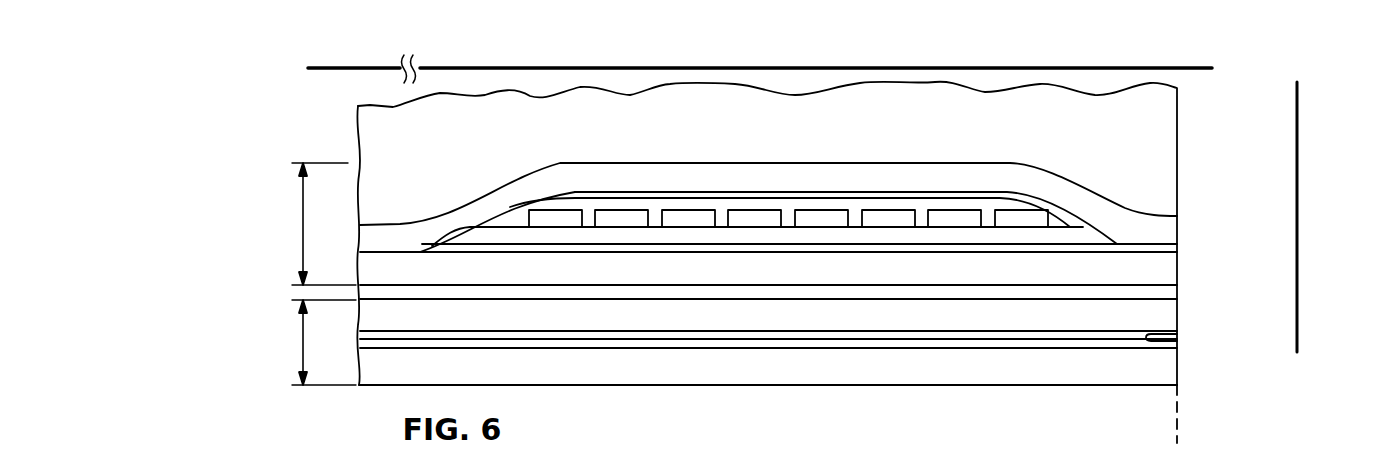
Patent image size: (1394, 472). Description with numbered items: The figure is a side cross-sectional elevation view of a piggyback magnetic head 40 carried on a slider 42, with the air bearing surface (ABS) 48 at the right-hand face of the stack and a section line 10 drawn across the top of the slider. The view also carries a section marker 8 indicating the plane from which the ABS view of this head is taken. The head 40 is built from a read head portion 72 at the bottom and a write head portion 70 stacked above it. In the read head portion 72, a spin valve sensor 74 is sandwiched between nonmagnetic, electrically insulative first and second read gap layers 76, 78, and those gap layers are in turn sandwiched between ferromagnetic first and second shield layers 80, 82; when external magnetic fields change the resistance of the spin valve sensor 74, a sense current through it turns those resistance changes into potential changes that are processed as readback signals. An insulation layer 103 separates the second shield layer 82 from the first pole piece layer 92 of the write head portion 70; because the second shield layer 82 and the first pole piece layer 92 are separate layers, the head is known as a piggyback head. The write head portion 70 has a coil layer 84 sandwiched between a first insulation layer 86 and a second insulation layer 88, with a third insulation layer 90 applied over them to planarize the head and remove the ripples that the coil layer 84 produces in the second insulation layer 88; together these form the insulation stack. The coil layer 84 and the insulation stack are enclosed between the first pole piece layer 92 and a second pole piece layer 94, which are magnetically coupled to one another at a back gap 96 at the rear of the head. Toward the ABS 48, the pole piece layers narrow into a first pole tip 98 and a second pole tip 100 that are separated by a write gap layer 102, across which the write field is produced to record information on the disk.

The slider / head section line 10 is at (313, 68).
The magnetic head 40 is at (343, 118).
The slider 42 is at (1160, 117).
The second pole piece layer 94 is at (957, 175).
The second pole tip 100 is at (1168, 228).
The back gap 96 is at (401, 252).
The third insulation layer 90 is at (596, 193).
The second insulation layer 88 is at (1063, 220).
The coil layer 84 is at (820, 215).
The first insulation layer 86 is at (725, 238).
The write gap layer 102 is at (1177, 247).
The first pole piece layer 92 is at (1093, 272).
The first pole tip 98 is at (1177, 272).
The insulation layer 103 is at (1000, 292).
The second shield layer 82 is at (1047, 317).
The second read gap layer 78 is at (805, 330).
The first read gap layer 76 is at (838, 347).
The first shield layer 80 is at (942, 370).
The spin valve sensor 74 is at (1172, 338).
The air bearing surface 48 is at (1178, 440).
The section line 8 is at (1297, 343).
The write head portion 70 is at (303, 229).
The read head portion 72 is at (303, 348).